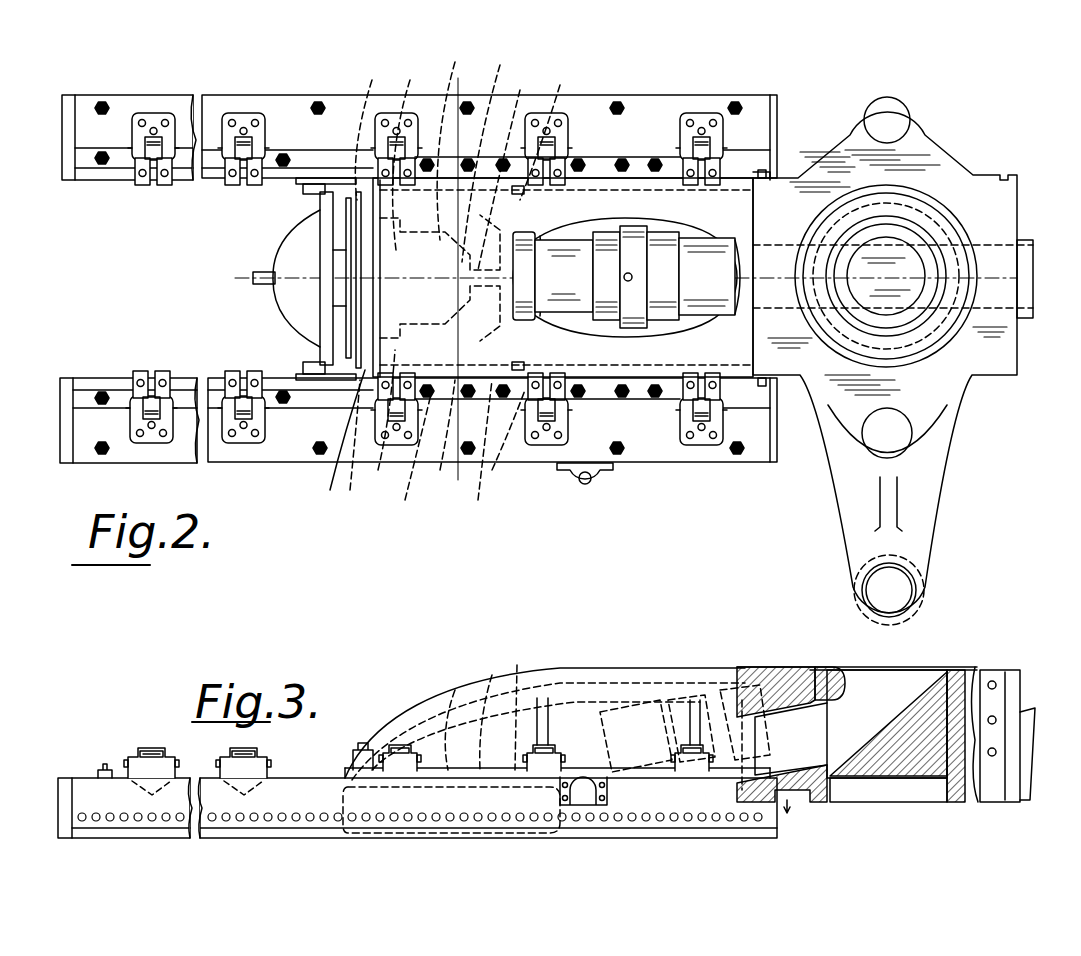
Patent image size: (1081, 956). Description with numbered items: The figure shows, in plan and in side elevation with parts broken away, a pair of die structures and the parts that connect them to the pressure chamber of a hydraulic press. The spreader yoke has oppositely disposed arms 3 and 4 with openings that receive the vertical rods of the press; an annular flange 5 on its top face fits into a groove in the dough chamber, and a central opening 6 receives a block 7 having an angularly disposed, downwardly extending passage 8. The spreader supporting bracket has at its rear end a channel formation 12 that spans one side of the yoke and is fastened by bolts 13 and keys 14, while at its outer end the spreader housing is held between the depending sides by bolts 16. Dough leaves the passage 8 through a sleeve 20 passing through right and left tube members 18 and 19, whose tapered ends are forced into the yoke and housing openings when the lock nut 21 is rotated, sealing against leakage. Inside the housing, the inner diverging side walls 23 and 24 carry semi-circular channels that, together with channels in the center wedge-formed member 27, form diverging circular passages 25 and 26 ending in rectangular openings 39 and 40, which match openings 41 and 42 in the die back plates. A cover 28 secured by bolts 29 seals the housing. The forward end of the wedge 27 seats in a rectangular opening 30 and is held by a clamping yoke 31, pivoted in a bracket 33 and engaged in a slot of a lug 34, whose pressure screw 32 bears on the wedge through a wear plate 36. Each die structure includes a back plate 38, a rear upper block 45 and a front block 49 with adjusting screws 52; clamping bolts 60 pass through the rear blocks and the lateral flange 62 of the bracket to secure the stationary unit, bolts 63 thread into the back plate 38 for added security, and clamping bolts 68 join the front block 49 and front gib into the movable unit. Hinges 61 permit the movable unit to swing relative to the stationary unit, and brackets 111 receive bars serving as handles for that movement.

In FIG. 2, the arm 3 is at (948, 104).
In FIG. 2, the arm 4 is at (930, 412).
In FIG. 3, the arm 4 is at (440, 818).
In FIG. 2, the annular flange 5 is at (930, 335).
In FIG. 3, the annular flange 5 is at (805, 668).
In FIG. 3, the central opening 6 is at (838, 668).
In FIG. 2, the block 7 is at (905, 235).
In FIG. 3, the block 7 is at (905, 778).
In FIG. 2, the passage 8 is at (910, 255).
In FIG. 3, the passage 8 is at (878, 760).
In FIG. 2, the channel formation 12 is at (775, 172).
In FIG. 2, the bolts 13 is at (766, 170).
In FIG. 2, the keys 14 is at (765, 470).
In FIG. 2, the bolts 16 is at (339, 440).
In FIG. 3, the bolts 16 is at (364, 743).
In FIG. 2, the right tube member 18 is at (570, 325).
In FIG. 3, the right tube member 18 is at (600, 712).
In FIG. 2, the left tube member 19 is at (690, 240).
In FIG. 3, the left tube member 19 is at (728, 690).
In FIG. 3, the sleeve 20 is at (768, 667).
In FIG. 2, the lock nut 21 is at (640, 330).
In FIG. 3, the lock nut 21 is at (660, 700).
In FIG. 2, the inner diverging side wall 23 is at (483, 201).
In FIG. 2, the inner diverging side wall 24 is at (458, 457).
In FIG. 2, the diverging circular passage 25 is at (455, 136).
In FIG. 2, the diverging circular passage 26 is at (414, 459).
In FIG. 2, the center wedge-formed member 27 is at (489, 151).
In FIG. 3, the cover 28 is at (489, 711).
In FIG. 3, the bolts 29 is at (446, 719).
In FIG. 2, the rectangular opening 30 is at (318, 220).
In FIG. 2, the clamping yoke 31 is at (290, 250).
In FIG. 2, the pressure screw 32 is at (265, 284).
In FIG. 2, the bracket 33 is at (302, 358).
In FIG. 2, the lug 34 is at (300, 190).
In FIG. 2, the wear plate 36 is at (340, 302).
In FIG. 2, the back plate 38 is at (118, 180).
In FIG. 2, the rectangular opening 39 is at (374, 131).
In FIG. 2, the rectangular opening 40 is at (381, 427).
In FIG. 2, the opening 41 is at (410, 154).
In FIG. 2, the opening 42 is at (354, 450).
In FIG. 2, the rear upper block 45 is at (186, 182).
In FIG. 2, the front block 49 is at (248, 100).
In FIG. 3, the front block 49 is at (80, 780).
In FIG. 3, the adjusting screws 52 is at (84, 821).
In FIG. 2, the clamping bolts 60 is at (100, 162).
In FIG. 2, the hinges 61 is at (163, 183).
In FIG. 3, the hinges 61 is at (175, 750).
In FIG. 2, the lateral flange 62 is at (636, 155).
In FIG. 2, the bolts 63 is at (520, 194).
In FIG. 2, the clamping bolts 68 is at (318, 100).
In FIG. 3, the clamping bolts 68 is at (105, 765).
In FIG. 2, the brackets 111 is at (572, 482).
In FIG. 3, the brackets 111 is at (590, 806).